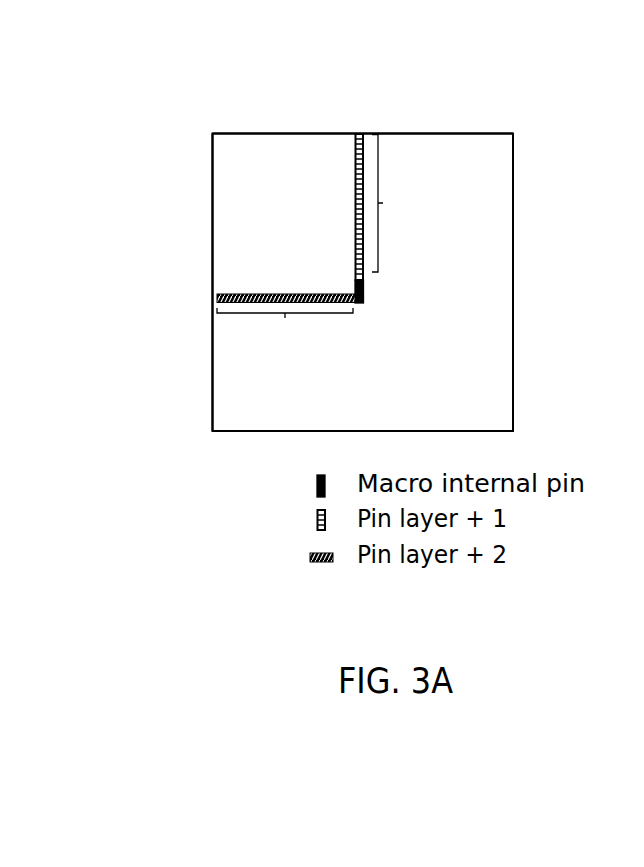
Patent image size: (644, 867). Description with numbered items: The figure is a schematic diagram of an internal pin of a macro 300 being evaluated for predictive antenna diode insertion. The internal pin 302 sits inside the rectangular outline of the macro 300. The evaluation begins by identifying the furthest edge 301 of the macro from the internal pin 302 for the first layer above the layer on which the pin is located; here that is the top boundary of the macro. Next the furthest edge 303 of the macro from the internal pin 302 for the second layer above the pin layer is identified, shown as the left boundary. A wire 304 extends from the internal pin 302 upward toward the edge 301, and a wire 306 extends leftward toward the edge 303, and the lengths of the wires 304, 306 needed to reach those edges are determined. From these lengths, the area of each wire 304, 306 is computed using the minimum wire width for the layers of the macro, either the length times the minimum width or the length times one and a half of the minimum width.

The macro 300 is at (514, 132).
The furthest edge 301 is at (409, 132).
The internal pin 302 is at (373, 282).
The furthest edge 303 is at (211, 267).
The wire 304 is at (398, 207).
The wire 306 is at (286, 322).